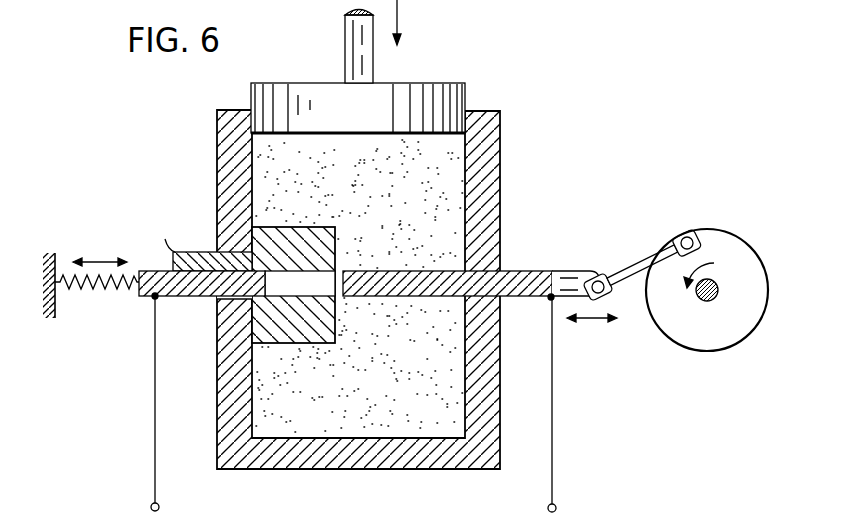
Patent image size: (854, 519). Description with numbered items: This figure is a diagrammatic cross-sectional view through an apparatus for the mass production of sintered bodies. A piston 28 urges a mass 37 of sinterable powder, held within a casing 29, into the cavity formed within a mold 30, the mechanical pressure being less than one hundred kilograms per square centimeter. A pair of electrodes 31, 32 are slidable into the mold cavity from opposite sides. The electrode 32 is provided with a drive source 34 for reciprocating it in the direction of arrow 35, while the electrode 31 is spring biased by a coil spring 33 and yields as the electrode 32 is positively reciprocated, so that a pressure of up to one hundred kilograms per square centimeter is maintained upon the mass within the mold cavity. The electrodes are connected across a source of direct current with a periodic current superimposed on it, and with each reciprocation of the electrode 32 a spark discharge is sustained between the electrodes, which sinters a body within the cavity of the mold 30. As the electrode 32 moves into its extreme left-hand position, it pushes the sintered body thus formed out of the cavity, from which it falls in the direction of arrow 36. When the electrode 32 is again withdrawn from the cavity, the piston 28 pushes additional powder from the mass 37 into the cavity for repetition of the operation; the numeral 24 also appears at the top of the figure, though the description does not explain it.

The electrode lead direction arrow 24 is at (469, 22).
The piston 28 is at (345, 32).
The casing 29 is at (217, 142).
The mold 30 is at (298, 344).
The electrode 31 is at (143, 297).
The electrode 32 is at (568, 272).
The coil spring 33 is at (92, 288).
The drive source 34 is at (722, 233).
The arrow 35 is at (598, 320).
The arrow 36 is at (236, 305).
The mass of sinterable powder 37 is at (452, 167).